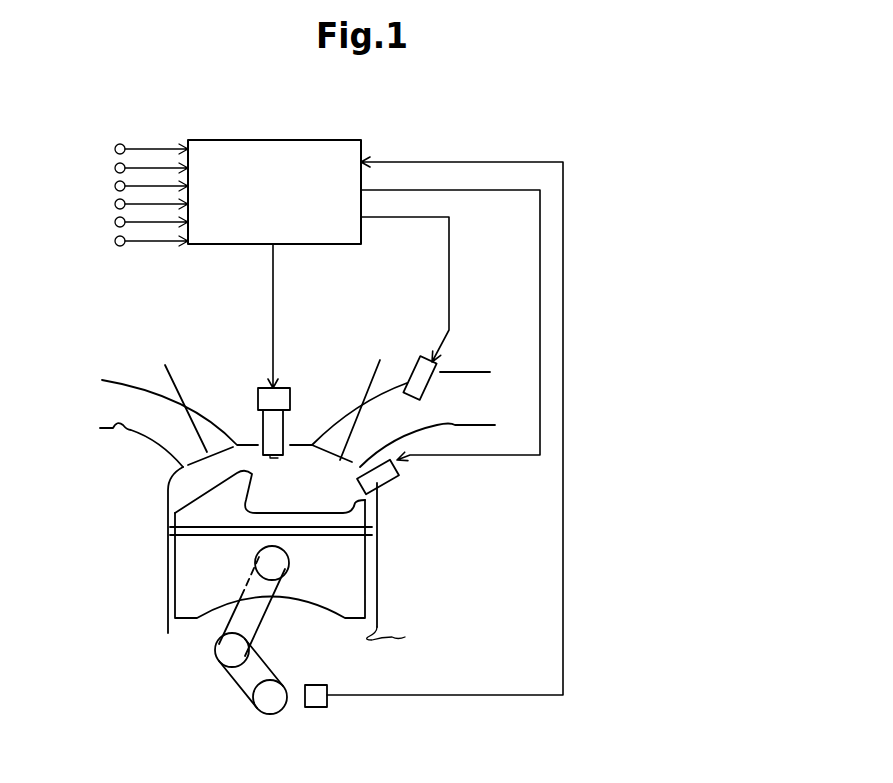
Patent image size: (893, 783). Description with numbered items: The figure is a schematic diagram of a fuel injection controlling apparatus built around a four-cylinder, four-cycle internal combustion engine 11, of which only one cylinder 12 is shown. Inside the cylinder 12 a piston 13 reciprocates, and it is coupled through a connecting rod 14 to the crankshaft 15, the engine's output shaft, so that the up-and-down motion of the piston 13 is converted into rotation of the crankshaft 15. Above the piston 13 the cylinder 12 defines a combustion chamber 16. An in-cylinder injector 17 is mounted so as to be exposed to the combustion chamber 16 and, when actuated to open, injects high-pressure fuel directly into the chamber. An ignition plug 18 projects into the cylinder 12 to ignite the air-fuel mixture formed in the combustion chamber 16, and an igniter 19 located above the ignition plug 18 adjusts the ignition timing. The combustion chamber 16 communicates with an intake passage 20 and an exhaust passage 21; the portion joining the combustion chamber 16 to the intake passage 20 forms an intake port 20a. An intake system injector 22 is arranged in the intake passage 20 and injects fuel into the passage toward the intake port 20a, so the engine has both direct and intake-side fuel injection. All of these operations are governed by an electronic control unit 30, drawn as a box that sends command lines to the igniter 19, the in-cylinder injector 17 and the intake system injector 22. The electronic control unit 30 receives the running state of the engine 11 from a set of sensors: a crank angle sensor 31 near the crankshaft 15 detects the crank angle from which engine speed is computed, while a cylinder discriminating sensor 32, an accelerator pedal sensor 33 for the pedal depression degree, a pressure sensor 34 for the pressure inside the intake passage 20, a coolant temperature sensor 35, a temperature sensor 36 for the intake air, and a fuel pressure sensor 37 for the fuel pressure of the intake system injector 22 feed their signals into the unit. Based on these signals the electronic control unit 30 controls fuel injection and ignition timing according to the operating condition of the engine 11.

The internal combustion engine 11 is at (415, 546).
The cylinder 12 is at (401, 637).
The piston 13 is at (192, 555).
The connecting rod 14 is at (256, 618).
The crankshaft 15 is at (256, 712).
The combustion chamber 16 is at (330, 493).
The in-cylinder injector 17 is at (394, 487).
The ignition plug 18 is at (262, 427).
The igniter 19 is at (292, 396).
The intake passage 20 is at (452, 423).
The intake port 20a is at (388, 390).
The exhaust passage 21 is at (118, 430).
The intake system injector 22 is at (437, 367).
The electronic control unit 30 is at (272, 140).
The crank angle sensor 31 is at (318, 688).
The cylinder discriminating sensor 32 is at (115, 243).
The accelerator pedal sensor 33 is at (115, 223).
The pressure sensor 34 is at (115, 205).
The coolant temperature sensor 35 is at (115, 187).
The temperature sensor 36 is at (115, 166).
The fuel pressure sensor 37 is at (115, 147).